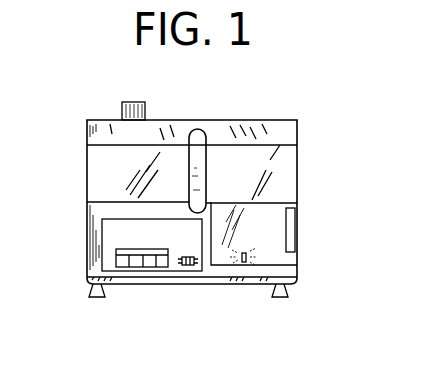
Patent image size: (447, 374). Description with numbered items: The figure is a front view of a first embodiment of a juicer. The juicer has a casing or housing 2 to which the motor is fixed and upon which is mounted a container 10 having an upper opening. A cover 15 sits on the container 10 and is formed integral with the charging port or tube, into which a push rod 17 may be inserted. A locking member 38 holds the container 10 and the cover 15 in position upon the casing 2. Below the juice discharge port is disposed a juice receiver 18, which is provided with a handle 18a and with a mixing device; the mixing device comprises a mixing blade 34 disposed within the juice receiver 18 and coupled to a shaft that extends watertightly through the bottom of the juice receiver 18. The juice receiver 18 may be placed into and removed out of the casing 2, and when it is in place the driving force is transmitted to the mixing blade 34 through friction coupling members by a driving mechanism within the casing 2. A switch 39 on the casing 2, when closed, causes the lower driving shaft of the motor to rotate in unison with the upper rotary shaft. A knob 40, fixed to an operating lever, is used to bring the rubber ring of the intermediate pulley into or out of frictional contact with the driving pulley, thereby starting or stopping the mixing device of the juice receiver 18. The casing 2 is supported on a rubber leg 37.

The casing 2 is at (87, 219).
The container 10 is at (298, 179).
The cover 15 is at (298, 132).
The push rod 17 is at (122, 107).
The juice receiver 18 is at (272, 250).
The handle 18a is at (298, 222).
The mixing blade 34 is at (248, 265).
The rubber leg 37 is at (278, 298).
The locking member 38 is at (198, 140).
The switch 39 is at (123, 262).
The knob 40 is at (187, 263).